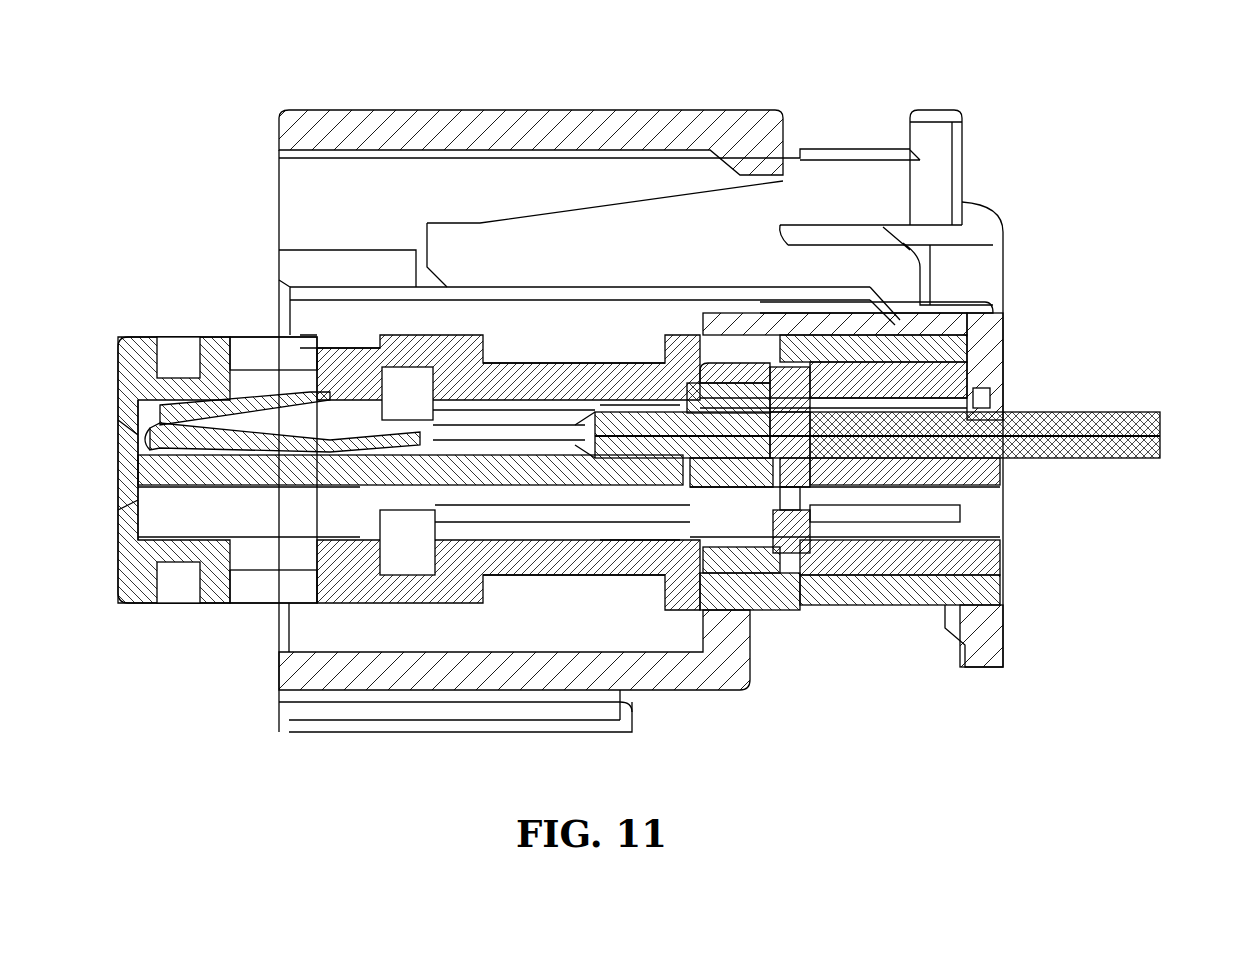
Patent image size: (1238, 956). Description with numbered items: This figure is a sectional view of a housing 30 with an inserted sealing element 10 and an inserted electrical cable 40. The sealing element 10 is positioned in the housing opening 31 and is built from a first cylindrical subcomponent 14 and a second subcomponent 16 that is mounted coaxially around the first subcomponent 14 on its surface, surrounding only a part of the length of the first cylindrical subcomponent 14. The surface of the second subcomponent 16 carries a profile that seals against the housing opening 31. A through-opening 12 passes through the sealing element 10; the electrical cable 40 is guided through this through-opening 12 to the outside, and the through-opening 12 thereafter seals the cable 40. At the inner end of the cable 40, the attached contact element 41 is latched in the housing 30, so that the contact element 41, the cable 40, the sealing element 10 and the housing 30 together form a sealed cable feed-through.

The sealing element 10 is at (724, 373).
The through-opening 12 is at (788, 447).
The first cylindrical subcomponent 14 is at (717, 563).
The second subcomponent 16 is at (803, 548).
The housing 30 is at (455, 355).
The housing opening 31 is at (820, 372).
The electrical cable 40 is at (1080, 415).
The contact element 41 is at (156, 428).